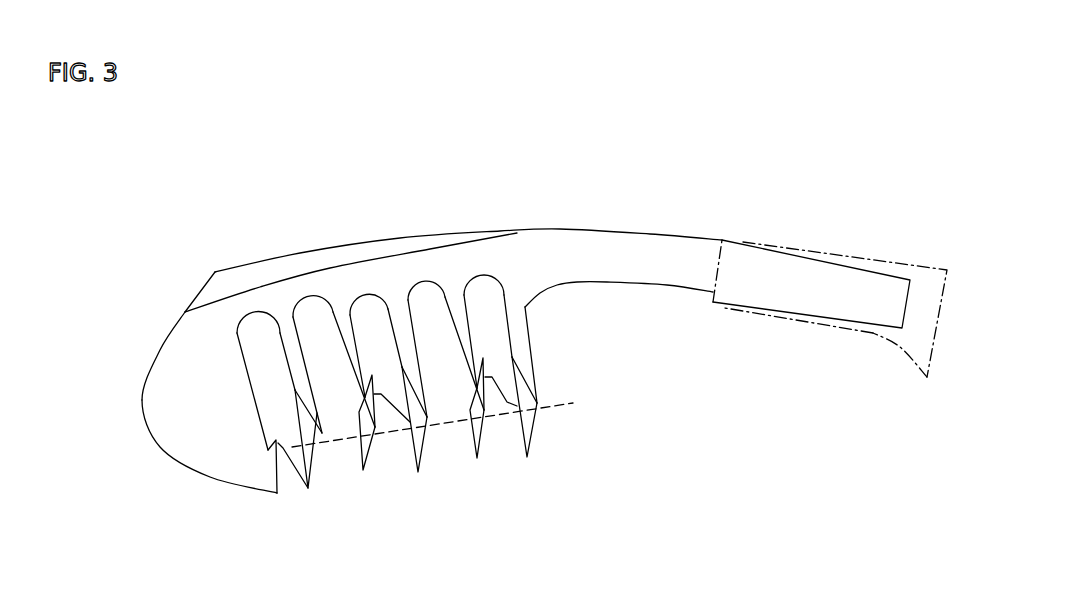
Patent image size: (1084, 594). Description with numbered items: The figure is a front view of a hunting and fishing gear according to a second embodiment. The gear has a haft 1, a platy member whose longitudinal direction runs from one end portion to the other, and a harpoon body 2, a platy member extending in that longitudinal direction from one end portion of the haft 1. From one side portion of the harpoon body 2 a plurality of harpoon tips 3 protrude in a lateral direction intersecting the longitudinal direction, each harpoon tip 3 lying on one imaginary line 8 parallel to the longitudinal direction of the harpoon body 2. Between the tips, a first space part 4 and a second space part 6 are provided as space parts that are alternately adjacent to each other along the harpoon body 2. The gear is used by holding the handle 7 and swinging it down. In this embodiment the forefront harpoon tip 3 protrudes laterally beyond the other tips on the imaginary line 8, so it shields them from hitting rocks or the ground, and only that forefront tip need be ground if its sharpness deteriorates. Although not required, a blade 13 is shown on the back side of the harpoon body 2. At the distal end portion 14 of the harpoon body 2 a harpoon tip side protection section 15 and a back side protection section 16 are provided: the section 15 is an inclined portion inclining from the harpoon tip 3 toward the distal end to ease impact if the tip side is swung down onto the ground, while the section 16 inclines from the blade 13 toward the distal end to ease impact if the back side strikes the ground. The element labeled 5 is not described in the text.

The haft 1 is at (685, 253).
The harpoon body 2 is at (527, 253).
The harpoon tip 3 is at (274, 472).
The first space part 4 is at (263, 323).
The protrusion 5 is at (417, 439).
The second space part 6 is at (317, 313).
The handle 7 is at (873, 333).
The imaginary line 8 is at (563, 405).
The blade 13 is at (380, 258).
The distal end portion 14 is at (168, 410).
The harpoon tip side protection section 15 is at (197, 450).
The back side protection section 16 is at (180, 343).